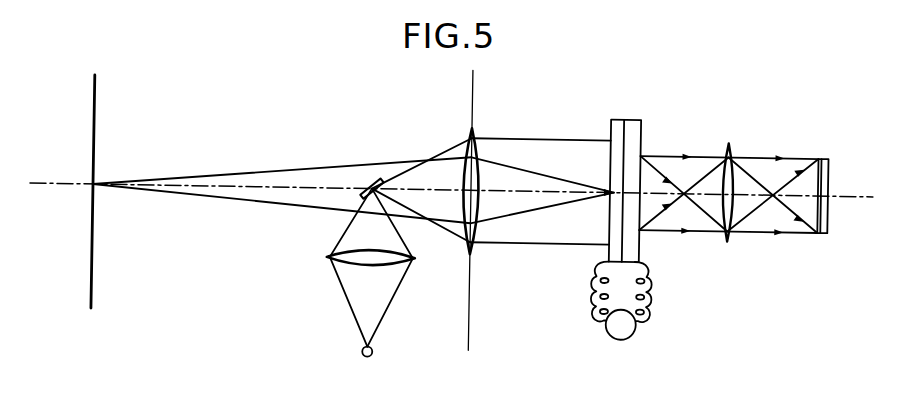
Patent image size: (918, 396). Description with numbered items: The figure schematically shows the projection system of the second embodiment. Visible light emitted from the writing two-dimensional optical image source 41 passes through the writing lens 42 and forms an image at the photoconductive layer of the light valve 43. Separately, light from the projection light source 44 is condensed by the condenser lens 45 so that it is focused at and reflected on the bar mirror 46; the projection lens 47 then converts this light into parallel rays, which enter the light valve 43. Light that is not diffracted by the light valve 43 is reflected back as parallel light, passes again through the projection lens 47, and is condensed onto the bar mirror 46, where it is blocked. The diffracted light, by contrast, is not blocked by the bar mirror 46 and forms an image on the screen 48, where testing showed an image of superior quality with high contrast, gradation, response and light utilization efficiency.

The writing two-dimensional optical image source 41 is at (823, 137).
The writing lens 42 is at (730, 134).
The light valve 43 is at (626, 111).
The projection light source 44 is at (375, 347).
The condenser lens 45 is at (417, 253).
The bar mirror 46 is at (373, 176).
The projection lens 47 is at (473, 123).
The screen 48 is at (94, 83).